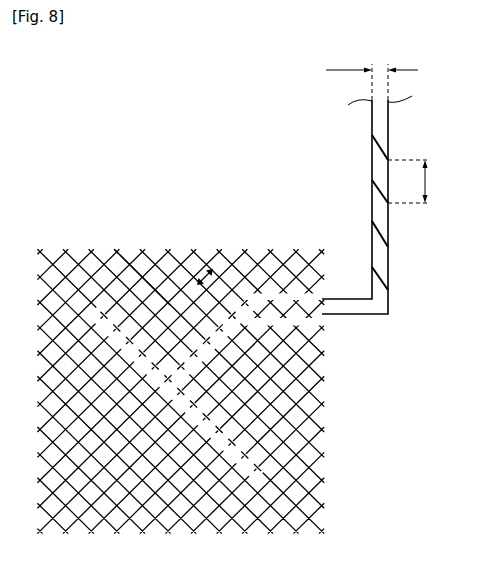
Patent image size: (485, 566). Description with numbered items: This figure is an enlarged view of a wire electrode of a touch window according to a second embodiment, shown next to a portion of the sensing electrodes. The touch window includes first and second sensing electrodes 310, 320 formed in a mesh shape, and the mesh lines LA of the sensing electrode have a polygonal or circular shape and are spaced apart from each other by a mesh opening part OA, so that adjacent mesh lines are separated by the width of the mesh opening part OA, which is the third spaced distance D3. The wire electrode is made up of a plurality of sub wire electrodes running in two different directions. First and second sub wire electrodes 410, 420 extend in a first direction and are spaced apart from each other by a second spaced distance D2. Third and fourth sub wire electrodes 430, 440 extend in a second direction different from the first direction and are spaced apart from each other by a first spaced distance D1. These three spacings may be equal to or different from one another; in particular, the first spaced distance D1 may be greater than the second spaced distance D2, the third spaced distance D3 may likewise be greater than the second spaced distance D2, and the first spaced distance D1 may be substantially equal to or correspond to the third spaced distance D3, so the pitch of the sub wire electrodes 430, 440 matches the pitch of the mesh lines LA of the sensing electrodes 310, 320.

The first sensing electrode 310 is at (278, 278).
The second sensing electrode 320 is at (125, 305).
The first sub wire electrode 410 is at (371, 152).
The second sub wire electrode 420 is at (390, 121).
The third sub wire electrode 430 is at (370, 124).
The fourth sub wire electrode 440 is at (371, 199).
The mesh opening part OA is at (175, 267).
The mesh lines LA is at (246, 271).
The first spaced distance D1 is at (422, 181).
The second spaced distance D2 is at (370, 74).
The third spaced distance D3 is at (203, 266).